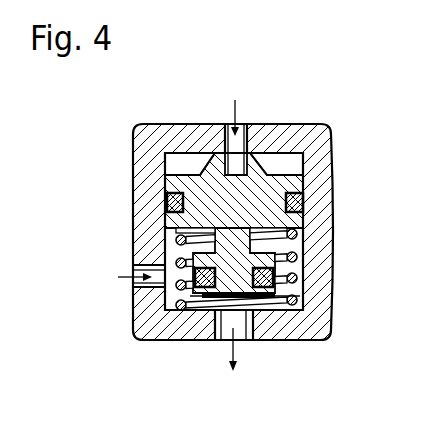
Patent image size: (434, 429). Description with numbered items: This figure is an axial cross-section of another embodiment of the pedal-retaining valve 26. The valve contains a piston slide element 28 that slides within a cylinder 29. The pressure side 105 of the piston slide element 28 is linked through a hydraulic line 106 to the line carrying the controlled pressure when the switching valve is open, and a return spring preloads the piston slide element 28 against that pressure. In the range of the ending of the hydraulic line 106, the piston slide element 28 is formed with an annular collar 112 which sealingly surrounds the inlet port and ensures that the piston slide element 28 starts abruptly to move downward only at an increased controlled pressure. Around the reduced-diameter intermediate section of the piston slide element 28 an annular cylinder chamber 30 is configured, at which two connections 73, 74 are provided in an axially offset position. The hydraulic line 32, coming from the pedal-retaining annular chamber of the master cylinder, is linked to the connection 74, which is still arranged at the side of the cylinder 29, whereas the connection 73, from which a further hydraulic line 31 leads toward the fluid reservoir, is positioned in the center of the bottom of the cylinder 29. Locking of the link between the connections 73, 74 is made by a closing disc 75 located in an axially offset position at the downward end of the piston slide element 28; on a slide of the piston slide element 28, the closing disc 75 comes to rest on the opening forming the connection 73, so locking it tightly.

The pedal-retaining valve 26 is at (338, 159).
The piston slide element 28 is at (167, 178).
The cylinder 29 is at (167, 222).
The annular cylinder chamber 30 is at (297, 248).
The hydraulic line 31 is at (244, 342).
The hydraulic line 32 is at (135, 288).
The connection 73 is at (213, 340).
The connection 74 is at (140, 260).
The closing disc 75 is at (247, 264).
The pressure side 105 is at (183, 160).
The hydraulic line 106 is at (227, 126).
The annular collar 112 is at (255, 152).